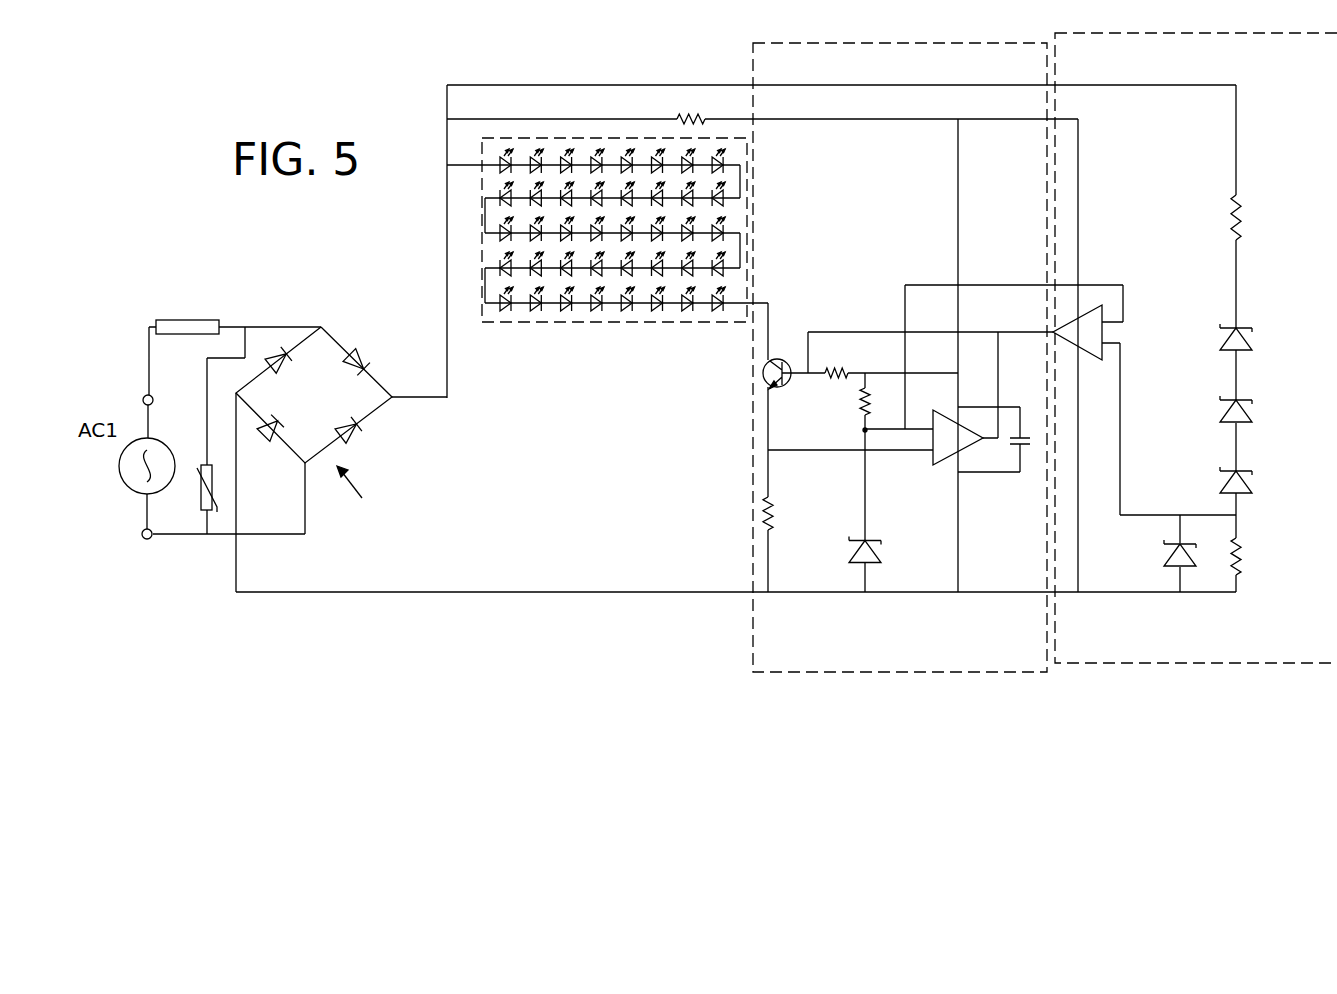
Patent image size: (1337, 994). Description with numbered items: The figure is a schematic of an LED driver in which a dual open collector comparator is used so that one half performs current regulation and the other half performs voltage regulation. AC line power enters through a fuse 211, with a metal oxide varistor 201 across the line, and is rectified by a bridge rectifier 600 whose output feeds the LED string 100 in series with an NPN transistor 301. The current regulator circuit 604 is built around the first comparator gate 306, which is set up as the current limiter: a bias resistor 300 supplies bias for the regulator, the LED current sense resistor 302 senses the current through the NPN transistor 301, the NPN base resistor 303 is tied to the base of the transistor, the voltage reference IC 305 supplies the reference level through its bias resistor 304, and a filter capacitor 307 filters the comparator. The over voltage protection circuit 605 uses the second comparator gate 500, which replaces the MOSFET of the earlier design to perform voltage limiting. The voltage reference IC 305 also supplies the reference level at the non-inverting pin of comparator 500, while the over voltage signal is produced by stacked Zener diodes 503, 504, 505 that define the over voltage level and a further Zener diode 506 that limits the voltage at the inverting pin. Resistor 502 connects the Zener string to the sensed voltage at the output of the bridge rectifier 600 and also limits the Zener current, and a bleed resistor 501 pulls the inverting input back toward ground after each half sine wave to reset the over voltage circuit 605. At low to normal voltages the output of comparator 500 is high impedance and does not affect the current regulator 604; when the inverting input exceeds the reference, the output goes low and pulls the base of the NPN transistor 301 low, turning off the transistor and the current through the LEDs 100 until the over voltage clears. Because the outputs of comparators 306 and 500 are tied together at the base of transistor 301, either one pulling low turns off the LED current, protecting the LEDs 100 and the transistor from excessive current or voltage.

The LED string 100 is at (612, 323).
The metal oxide varistor 201 is at (200, 492).
The fuse 211 is at (199, 318).
The bias resistor for current regulator 300 is at (690, 104).
The NPN transistor 301 is at (784, 360).
The LED current sense resistor 302 is at (775, 503).
The NPN base resistor 303 is at (823, 368).
The voltage reference bias resistor 304 is at (858, 404).
The voltage reference IC 305 is at (880, 555).
The dual open collector voltage comparator gate A 306 is at (932, 462).
The filter capacitor 307 is at (1025, 435).
The dual open collector voltage comparator gate B 500 is at (1103, 310).
The bleed resistor 501 is at (1245, 565).
The bias resistor for OVP circuit 502 is at (1241, 222).
The Zener diode, OVP reference 503 is at (1254, 342).
The Zener diode, OVP reference 504 is at (1254, 418).
The Zener diode, OVP reference 505 is at (1254, 490).
The Zener diode, gate voltage limiting 506 is at (1165, 558).
The bridge rectifier 600 is at (374, 486).
The current regulator circuit 604 is at (902, 668).
The over voltage protection circuit 605 is at (1158, 660).